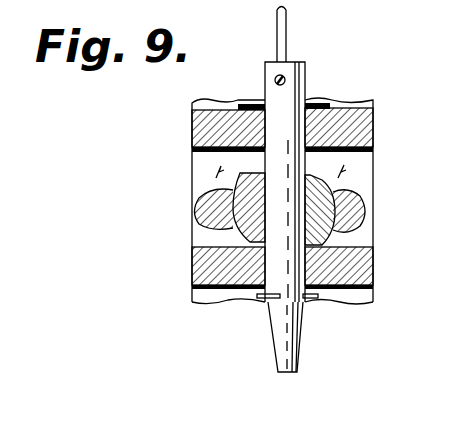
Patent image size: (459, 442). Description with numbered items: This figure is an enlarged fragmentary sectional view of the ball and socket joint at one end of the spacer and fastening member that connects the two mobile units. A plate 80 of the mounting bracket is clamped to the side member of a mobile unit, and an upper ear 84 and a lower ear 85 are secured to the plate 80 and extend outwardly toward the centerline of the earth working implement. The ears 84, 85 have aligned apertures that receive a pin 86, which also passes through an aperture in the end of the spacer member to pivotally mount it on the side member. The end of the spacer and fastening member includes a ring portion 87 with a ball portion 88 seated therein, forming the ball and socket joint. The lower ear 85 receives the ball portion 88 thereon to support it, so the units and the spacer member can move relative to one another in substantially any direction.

The plate 80 is at (368, 172).
The upper ear 84 is at (355, 103).
The lower ear 85 is at (373, 232).
The pin 86 is at (305, 75).
The ring portion 87 is at (222, 190).
The ball portion 88 is at (333, 238).